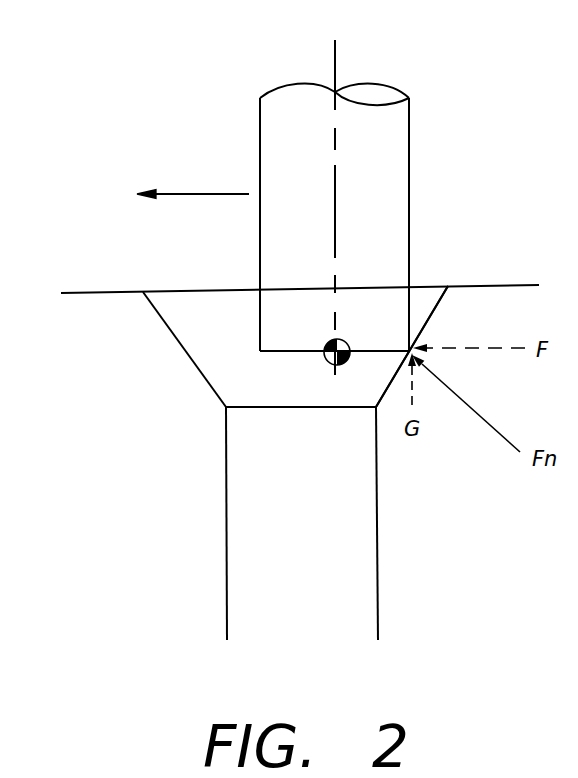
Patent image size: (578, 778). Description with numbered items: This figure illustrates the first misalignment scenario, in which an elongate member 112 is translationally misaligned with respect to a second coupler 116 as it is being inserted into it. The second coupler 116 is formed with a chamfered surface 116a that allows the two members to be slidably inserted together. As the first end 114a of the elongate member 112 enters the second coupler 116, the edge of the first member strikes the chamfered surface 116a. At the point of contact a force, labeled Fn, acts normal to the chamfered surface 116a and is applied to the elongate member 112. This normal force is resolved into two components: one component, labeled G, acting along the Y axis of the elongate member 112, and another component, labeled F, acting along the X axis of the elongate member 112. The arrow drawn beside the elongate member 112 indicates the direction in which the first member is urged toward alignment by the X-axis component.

The elongate member 112 is at (409, 165).
The first end 114a is at (298, 351).
The second coupler 116 is at (377, 528).
The chamfered surface 116a is at (432, 319).